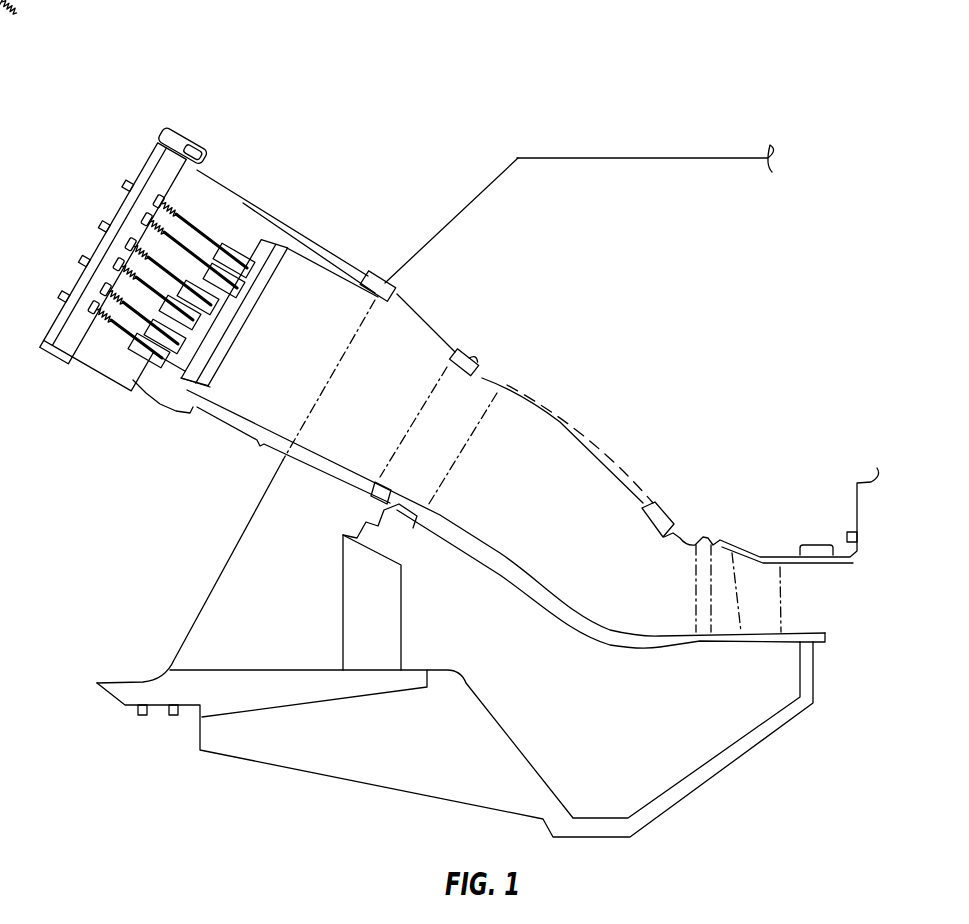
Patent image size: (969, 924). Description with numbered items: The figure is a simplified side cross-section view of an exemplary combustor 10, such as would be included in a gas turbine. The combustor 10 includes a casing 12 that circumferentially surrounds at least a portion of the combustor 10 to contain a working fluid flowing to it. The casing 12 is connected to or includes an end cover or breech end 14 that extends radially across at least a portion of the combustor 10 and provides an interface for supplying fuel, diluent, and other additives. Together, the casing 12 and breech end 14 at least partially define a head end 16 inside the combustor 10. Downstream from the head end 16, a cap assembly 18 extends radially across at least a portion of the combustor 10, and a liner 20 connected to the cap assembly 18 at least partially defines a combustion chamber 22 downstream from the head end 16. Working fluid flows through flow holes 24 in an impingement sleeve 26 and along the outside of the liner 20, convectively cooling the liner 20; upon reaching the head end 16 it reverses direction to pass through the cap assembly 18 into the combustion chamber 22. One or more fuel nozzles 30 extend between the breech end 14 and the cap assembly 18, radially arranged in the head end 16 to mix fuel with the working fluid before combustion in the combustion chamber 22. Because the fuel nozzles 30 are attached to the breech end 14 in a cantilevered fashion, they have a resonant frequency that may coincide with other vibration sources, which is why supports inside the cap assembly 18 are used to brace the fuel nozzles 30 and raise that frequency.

The combustor 10 is at (352, 112).
The casing 12 is at (327, 247).
The breech end 14 is at (74, 295).
The head end 16 is at (126, 398).
The cap assembly 18 is at (157, 405).
The liner 20 is at (395, 331).
The combustion chamber 22 is at (301, 361).
The flow holes 24 is at (507, 385).
The impingement sleeve 26 is at (547, 410).
The fuel nozzles 30 is at (175, 333).